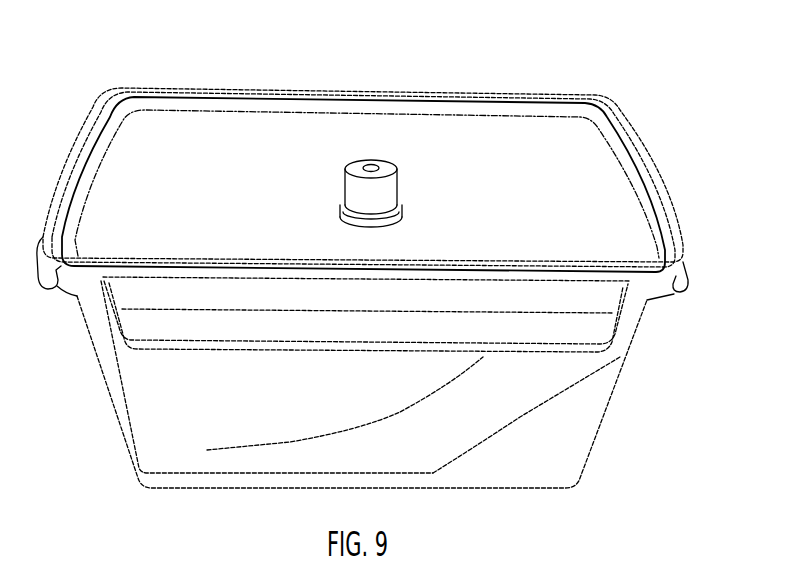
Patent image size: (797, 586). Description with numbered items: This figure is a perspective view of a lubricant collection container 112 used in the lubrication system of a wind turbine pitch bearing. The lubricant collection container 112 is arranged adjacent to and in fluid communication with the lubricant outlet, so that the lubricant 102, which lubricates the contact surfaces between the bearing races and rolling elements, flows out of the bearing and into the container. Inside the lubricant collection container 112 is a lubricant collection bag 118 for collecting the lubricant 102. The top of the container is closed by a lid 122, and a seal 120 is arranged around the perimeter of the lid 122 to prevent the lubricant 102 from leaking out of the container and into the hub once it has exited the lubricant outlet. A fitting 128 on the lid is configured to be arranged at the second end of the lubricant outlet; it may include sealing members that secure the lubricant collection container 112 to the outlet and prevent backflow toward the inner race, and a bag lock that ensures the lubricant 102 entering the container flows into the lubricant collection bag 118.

The lubricant 102 is at (388, 384).
The lubricant collection container 112 is at (708, 148).
The lubricant collection bag 118 is at (503, 390).
The seal 120 is at (458, 95).
The lid 122 is at (197, 128).
The fitting 128 is at (370, 158).